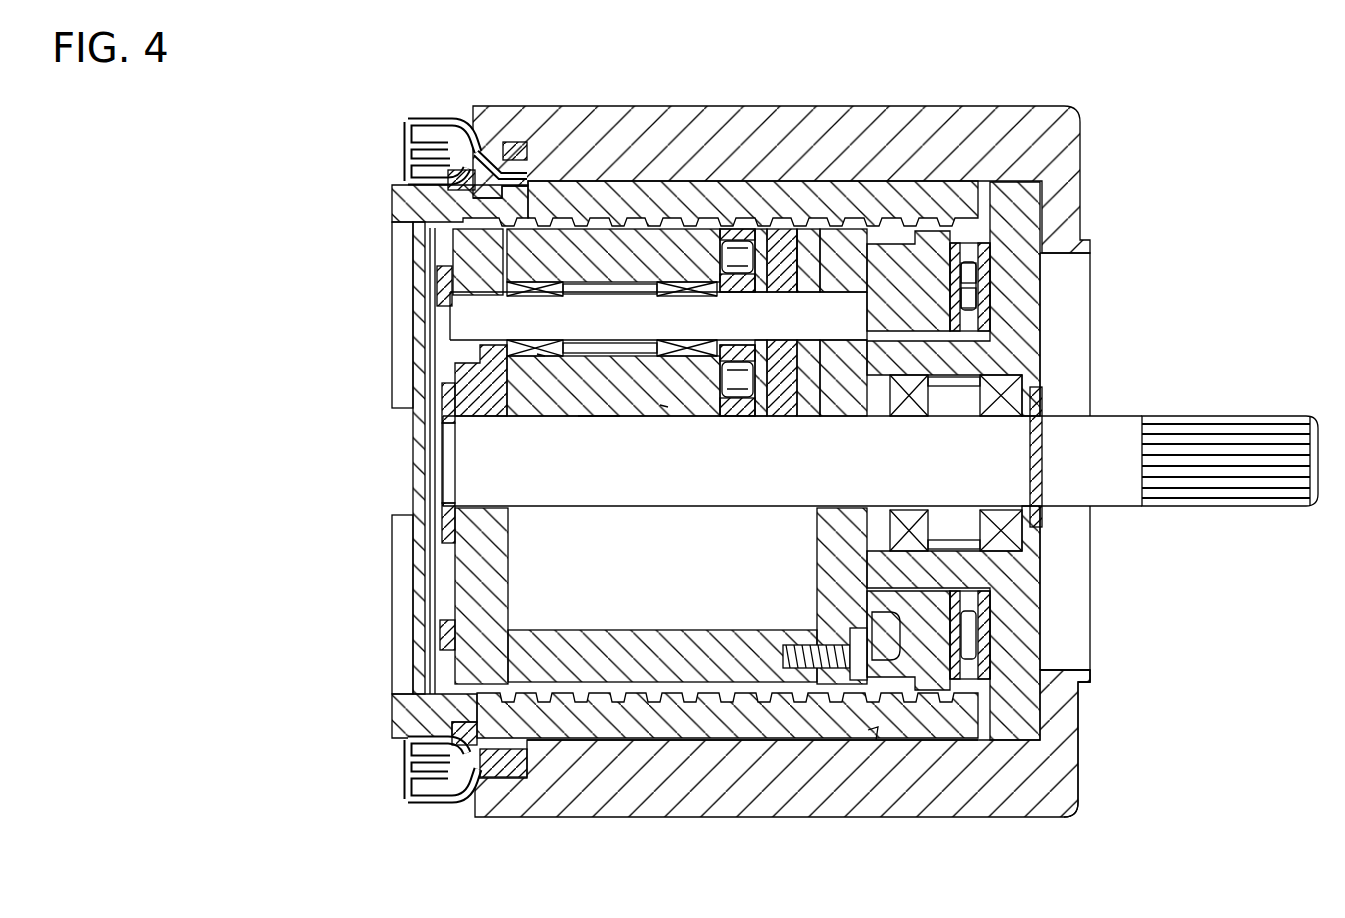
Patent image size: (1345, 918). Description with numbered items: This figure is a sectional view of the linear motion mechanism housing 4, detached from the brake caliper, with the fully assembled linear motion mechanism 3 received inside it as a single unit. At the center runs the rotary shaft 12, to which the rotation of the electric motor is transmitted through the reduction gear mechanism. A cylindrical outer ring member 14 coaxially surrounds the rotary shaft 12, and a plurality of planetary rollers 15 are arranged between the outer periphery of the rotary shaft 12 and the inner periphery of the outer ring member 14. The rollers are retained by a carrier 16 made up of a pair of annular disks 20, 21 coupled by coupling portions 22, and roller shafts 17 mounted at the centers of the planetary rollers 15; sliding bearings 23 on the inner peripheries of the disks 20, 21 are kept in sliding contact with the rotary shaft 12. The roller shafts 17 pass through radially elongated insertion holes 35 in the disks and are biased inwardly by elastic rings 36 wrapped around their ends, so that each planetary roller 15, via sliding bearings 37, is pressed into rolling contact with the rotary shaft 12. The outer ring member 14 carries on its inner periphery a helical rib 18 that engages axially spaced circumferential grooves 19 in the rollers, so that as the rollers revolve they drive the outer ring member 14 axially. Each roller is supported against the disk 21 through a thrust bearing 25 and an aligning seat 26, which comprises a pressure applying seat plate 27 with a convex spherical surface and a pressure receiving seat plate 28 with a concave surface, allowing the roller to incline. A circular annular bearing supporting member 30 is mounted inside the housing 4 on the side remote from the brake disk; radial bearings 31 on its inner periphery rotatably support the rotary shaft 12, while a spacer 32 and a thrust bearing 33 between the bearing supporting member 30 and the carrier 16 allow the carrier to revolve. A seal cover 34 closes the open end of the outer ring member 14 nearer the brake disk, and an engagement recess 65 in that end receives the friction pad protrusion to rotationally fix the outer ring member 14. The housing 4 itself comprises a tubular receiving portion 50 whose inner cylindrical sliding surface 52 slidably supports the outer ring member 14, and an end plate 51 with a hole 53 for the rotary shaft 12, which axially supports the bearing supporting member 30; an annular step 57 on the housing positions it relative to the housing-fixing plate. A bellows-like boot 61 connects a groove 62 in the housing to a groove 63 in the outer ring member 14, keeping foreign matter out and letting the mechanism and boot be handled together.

The linear motion mechanism 3 is at (601, 180).
The linear motion mechanism housing 4 is at (722, 106).
The rotary shaft 12 is at (1208, 440).
The outer ring member 14 is at (708, 730).
The planetary rollers 15 is at (638, 235).
The carrier 16 is at (850, 240).
The roller shafts 17 is at (462, 317).
The helical rib 18 is at (634, 700).
The circumferential grooves 19 is at (612, 416).
The disk 20 is at (495, 577).
The disk 21 is at (822, 565).
The coupling portions 22 is at (668, 648).
The sliding bearings 23 is at (490, 418).
The thrust bearing 25 is at (738, 393).
The aligning seat 26 is at (786, 245).
The pressure applying seat plate 27 is at (775, 395).
The pressure receiving seat plate 28 is at (805, 402).
The bearing supporting member 30 is at (1017, 190).
The radial bearings 31 is at (997, 412).
The spacer 32 is at (907, 257).
The thrust bearing 33 is at (966, 262).
The seal cover 34 is at (413, 262).
The insertion holes 35 is at (467, 325).
The elastic rings 36 is at (437, 282).
The sliding bearings 37 is at (537, 356).
The tubular receiving portion 50 is at (792, 807).
The end plate 51 is at (1067, 722).
The sliding surface 52 is at (878, 727).
The hole 53 is at (1065, 663).
The step 57 is at (1080, 671).
The boot 61 is at (400, 128).
The groove 62 is at (514, 142).
The groove 63 is at (483, 196).
The engagement recess 65 is at (407, 515).